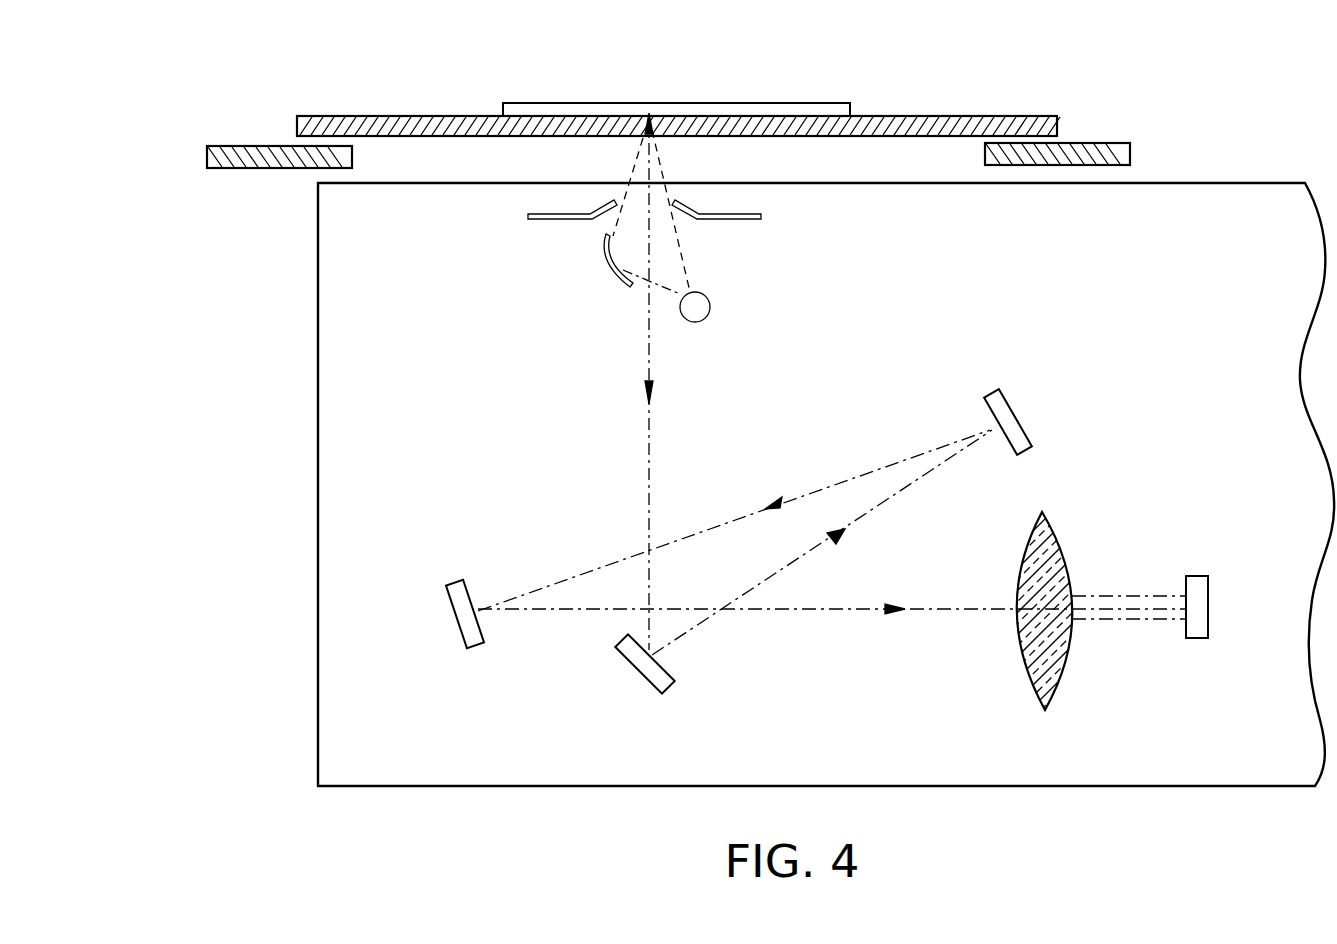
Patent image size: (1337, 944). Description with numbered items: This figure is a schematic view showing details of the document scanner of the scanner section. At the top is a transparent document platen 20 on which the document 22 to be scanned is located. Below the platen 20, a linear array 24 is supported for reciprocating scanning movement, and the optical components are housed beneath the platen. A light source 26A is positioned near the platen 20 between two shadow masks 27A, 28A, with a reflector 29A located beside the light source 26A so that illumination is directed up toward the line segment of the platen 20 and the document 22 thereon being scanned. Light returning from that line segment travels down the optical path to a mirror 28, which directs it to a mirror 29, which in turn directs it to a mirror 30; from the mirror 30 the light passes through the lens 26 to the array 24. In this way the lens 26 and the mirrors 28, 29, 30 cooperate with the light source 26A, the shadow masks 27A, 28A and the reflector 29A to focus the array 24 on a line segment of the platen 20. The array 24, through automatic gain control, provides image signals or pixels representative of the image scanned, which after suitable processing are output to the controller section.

The transparent document platen 20 is at (447, 137).
The document 22 is at (778, 102).
The linear array 24 is at (1195, 576).
The lens 26 is at (1063, 673).
The light source 26A is at (710, 310).
The shadow mask 27A is at (567, 222).
The mirror 28 is at (642, 676).
The shadow mask 28A is at (720, 222).
The mirror 29 is at (1022, 427).
The reflector 29A is at (609, 268).
The mirror 30 is at (452, 617).